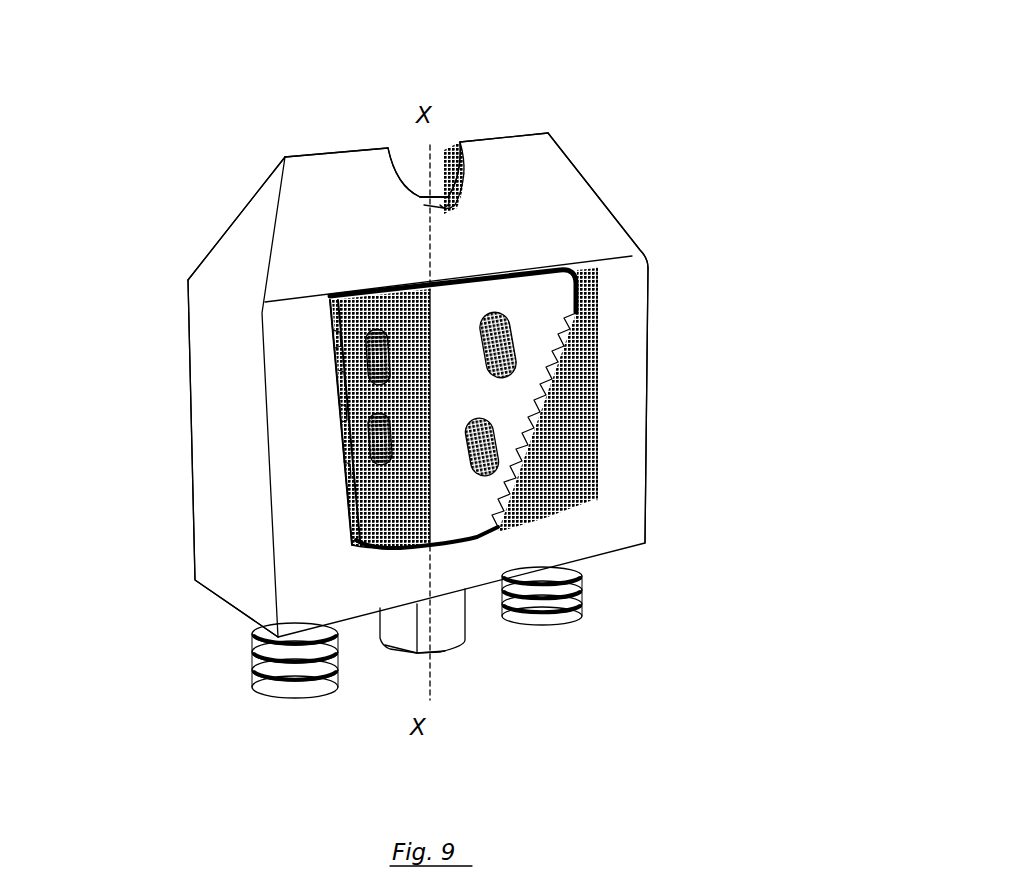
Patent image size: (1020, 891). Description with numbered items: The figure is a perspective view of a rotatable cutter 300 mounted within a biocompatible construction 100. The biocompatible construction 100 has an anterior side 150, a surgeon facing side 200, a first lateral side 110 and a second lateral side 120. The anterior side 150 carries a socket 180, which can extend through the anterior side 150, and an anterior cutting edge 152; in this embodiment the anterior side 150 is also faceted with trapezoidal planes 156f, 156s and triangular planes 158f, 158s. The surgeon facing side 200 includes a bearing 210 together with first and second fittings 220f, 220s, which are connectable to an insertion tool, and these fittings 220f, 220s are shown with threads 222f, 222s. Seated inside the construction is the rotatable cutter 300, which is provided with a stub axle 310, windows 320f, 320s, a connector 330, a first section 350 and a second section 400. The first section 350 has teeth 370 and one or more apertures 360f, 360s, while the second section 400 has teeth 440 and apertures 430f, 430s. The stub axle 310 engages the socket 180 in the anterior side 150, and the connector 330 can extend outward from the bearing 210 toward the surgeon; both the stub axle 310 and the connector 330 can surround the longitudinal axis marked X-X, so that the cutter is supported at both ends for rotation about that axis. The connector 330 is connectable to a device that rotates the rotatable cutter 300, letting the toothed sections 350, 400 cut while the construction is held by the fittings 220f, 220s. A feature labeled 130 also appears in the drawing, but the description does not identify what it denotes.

The biocompatible construction 100 is at (633, 132).
The first lateral side 110 is at (225, 388).
The second lateral side 120 is at (647, 415).
The upper lip of cavity 130 is at (585, 290).
The anterior side 150 is at (383, 112).
The anterior cutting edge 152 is at (344, 148).
The trapezoidal plane 156f is at (310, 152).
The trapezoidal plane 156s is at (550, 214).
The triangular plane 158f is at (245, 238).
The triangular plane 158s is at (588, 180).
The socket 180 is at (455, 172).
The surgeon facing side 200 is at (468, 663).
The bearing 210 is at (393, 527).
The first fitting 220f is at (252, 677).
The second fitting 220s is at (582, 597).
The threads 222f is at (268, 690).
The threads 222s is at (555, 620).
The rotatable cutter 300 is at (553, 417).
The stub axle 310 is at (436, 193).
The window 320f is at (378, 357).
The window 320s is at (380, 458).
The connector 330 is at (452, 652).
The first section 350 is at (347, 378).
The aperture 360f is at (333, 338).
The aperture 360s is at (345, 412).
The teeth 370 is at (347, 470).
The second section 400 is at (457, 392).
The aperture 430f is at (505, 337).
The aperture 430s is at (485, 452).
The teeth 440 is at (556, 375).